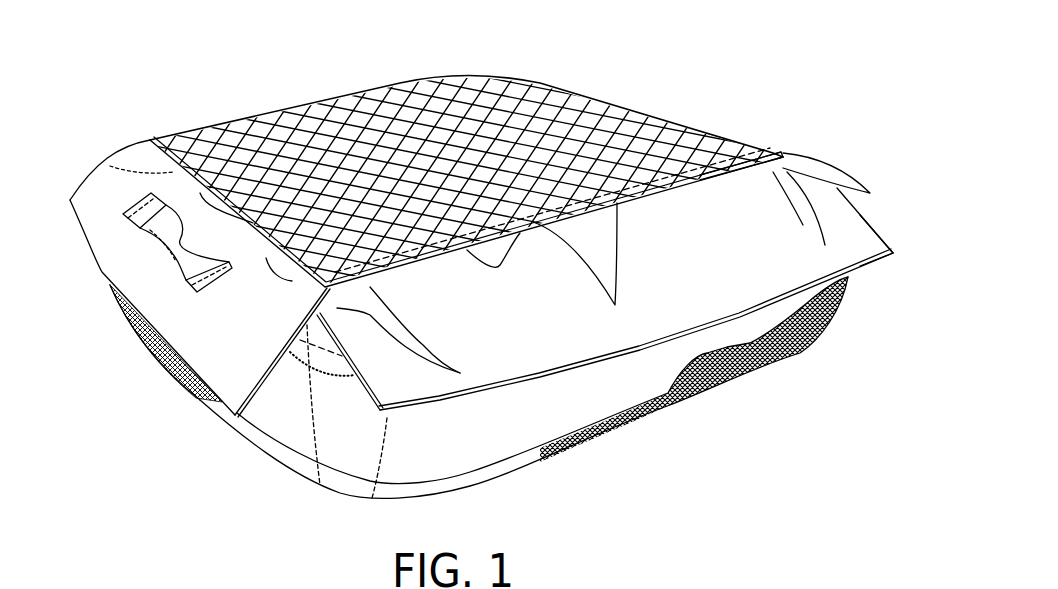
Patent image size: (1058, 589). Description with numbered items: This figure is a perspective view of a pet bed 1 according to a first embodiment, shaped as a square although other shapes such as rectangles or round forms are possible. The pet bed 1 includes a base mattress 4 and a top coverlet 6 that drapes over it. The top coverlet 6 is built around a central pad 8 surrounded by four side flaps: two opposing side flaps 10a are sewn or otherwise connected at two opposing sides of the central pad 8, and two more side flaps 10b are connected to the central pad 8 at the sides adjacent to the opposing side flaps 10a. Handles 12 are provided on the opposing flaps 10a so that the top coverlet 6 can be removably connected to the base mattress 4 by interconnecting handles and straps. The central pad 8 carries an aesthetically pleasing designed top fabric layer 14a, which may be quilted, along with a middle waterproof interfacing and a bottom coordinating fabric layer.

The pet bed 1 is at (698, 102).
The base mattress 4 is at (670, 410).
The top coverlet 6 is at (93, 260).
The central pad 8 is at (777, 150).
The side flaps 10a is at (830, 165).
The side flaps 10b is at (870, 238).
The handles 12 is at (98, 195).
The top fabric layer 14a is at (347, 108).